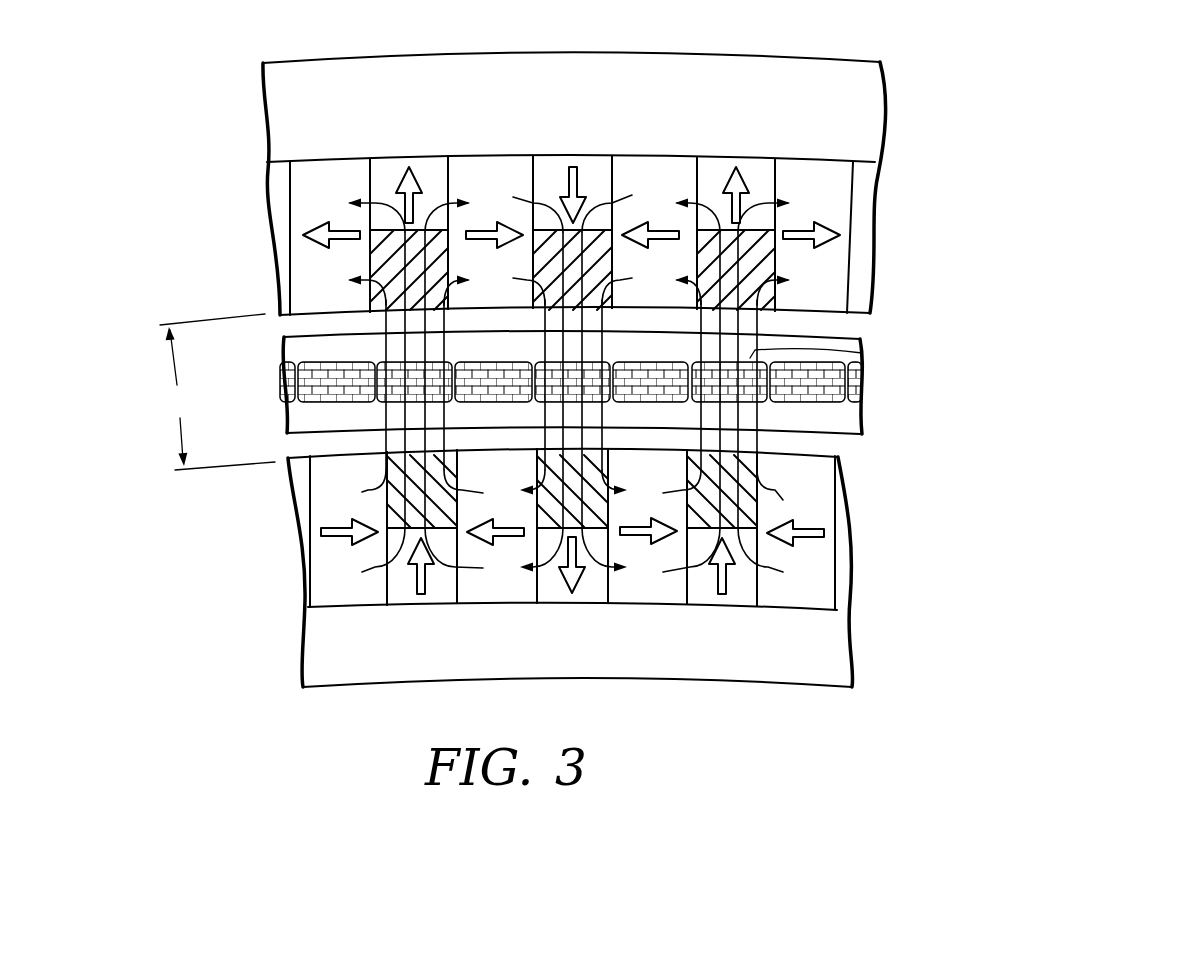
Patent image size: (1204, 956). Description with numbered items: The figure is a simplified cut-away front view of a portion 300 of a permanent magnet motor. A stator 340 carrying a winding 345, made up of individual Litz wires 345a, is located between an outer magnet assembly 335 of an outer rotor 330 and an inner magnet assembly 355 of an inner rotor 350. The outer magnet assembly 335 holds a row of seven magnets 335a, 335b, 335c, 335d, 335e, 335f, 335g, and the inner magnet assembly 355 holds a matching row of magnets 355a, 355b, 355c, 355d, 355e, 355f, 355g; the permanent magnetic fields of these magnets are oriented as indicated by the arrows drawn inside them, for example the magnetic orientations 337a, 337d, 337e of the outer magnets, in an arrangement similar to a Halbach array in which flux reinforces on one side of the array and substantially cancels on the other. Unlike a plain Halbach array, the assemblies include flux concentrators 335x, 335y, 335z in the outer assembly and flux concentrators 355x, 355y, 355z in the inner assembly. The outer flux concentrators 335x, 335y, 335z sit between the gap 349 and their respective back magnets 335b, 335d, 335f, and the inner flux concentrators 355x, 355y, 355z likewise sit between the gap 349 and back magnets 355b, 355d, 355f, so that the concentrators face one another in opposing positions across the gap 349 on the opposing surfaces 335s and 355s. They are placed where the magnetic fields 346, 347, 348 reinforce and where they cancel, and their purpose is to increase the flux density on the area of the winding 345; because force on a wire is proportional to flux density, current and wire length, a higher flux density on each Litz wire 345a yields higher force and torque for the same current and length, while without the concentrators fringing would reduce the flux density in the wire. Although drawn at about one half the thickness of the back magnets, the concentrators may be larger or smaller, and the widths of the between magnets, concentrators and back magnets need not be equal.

The portion of permanent magnet motor 300 is at (671, 367).
The outer rotor 330 is at (623, 176).
The outer magnet assembly 335 is at (623, 164).
The magnet 335a is at (286, 205).
The back magnet 335b is at (326, 204).
The magnet 335c is at (517, 173).
The back magnet 335d is at (564, 162).
The magnet 335e is at (658, 161).
The back magnet 335f is at (824, 203).
The magnet 335g is at (838, 173).
The flux concentrator 335x is at (371, 258).
The flux concentrator 335y is at (525, 257).
The flux concentrator 335z is at (776, 258).
The surface 335s is at (834, 314).
The magnetic orientation 337a is at (328, 230).
The magnetic orientation 337d is at (607, 263).
The magnetic orientation 337e is at (652, 222).
The stator 340 is at (667, 382).
The winding 345 is at (830, 408).
The Litz wire 345a is at (862, 353).
The magnetic field 346 is at (384, 196).
The magnetic field 347 is at (548, 193).
The magnetic field 348 is at (709, 193).
The gap 349 is at (216, 392).
The inner rotor 350 is at (622, 583).
The inner magnet assembly 355 is at (622, 588).
The magnet 355a is at (337, 593).
The back magnet 355b is at (334, 558).
The magnet 355c is at (482, 593).
The back magnet 355d is at (617, 588).
The magnet 355e is at (632, 593).
The back magnet 355f is at (812, 558).
The magnet 355g is at (779, 593).
The flux concentrator 355x is at (397, 501).
The flux concentrator 355y is at (600, 511).
The flux concentrator 355z is at (757, 506).
The surface 355s is at (832, 459).